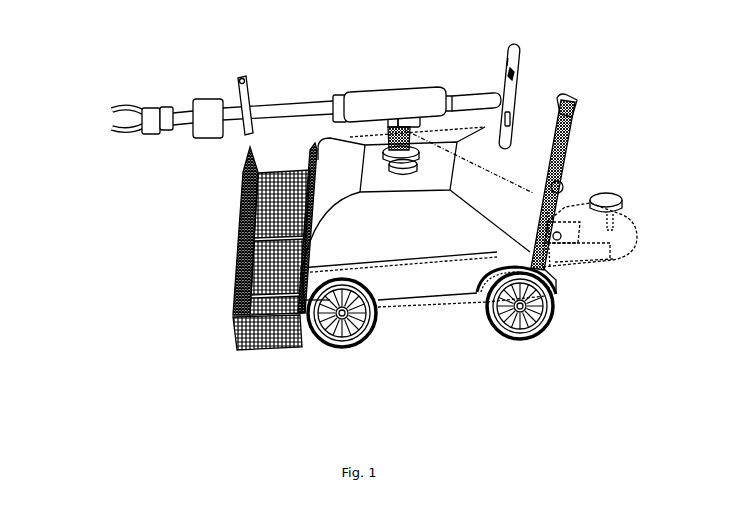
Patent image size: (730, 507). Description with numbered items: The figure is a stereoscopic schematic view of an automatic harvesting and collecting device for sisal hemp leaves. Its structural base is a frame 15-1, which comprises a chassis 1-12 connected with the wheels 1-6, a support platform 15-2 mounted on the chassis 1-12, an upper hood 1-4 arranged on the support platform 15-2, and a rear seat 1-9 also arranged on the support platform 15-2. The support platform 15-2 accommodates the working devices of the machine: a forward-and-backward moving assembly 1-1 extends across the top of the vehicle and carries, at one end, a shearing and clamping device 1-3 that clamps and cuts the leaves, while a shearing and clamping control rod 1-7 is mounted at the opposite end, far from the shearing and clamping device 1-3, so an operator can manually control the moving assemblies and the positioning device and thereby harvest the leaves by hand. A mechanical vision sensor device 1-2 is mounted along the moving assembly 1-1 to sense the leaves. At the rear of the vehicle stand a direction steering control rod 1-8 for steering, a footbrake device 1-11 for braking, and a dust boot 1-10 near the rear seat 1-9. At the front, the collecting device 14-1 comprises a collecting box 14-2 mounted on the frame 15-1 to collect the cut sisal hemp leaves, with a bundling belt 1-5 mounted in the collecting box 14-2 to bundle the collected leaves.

The forward-and-backward moving assembly 1-1 is at (373, 93).
The mechanical vision sensor device 1-2 is at (235, 80).
The shearing and clamping device 1-3 is at (127, 124).
The upper hood 1-4 is at (333, 197).
The bundling belt 1-5 is at (233, 283).
The wheel 1-6 is at (233, 310).
The shearing and clamping control rod 1-7 is at (515, 72).
The direction steering control rod 1-8 is at (570, 143).
The rear seat 1-9 is at (600, 195).
The dust boot 1-10 is at (628, 222).
The footbrake device 1-11 is at (563, 242).
The chassis 1-12 is at (540, 331).
The collecting device 14-1 is at (170, 246).
The collecting box 14-2 is at (228, 295).
The frame 15-1 is at (407, 332).
The support platform 15-2 is at (618, 220).